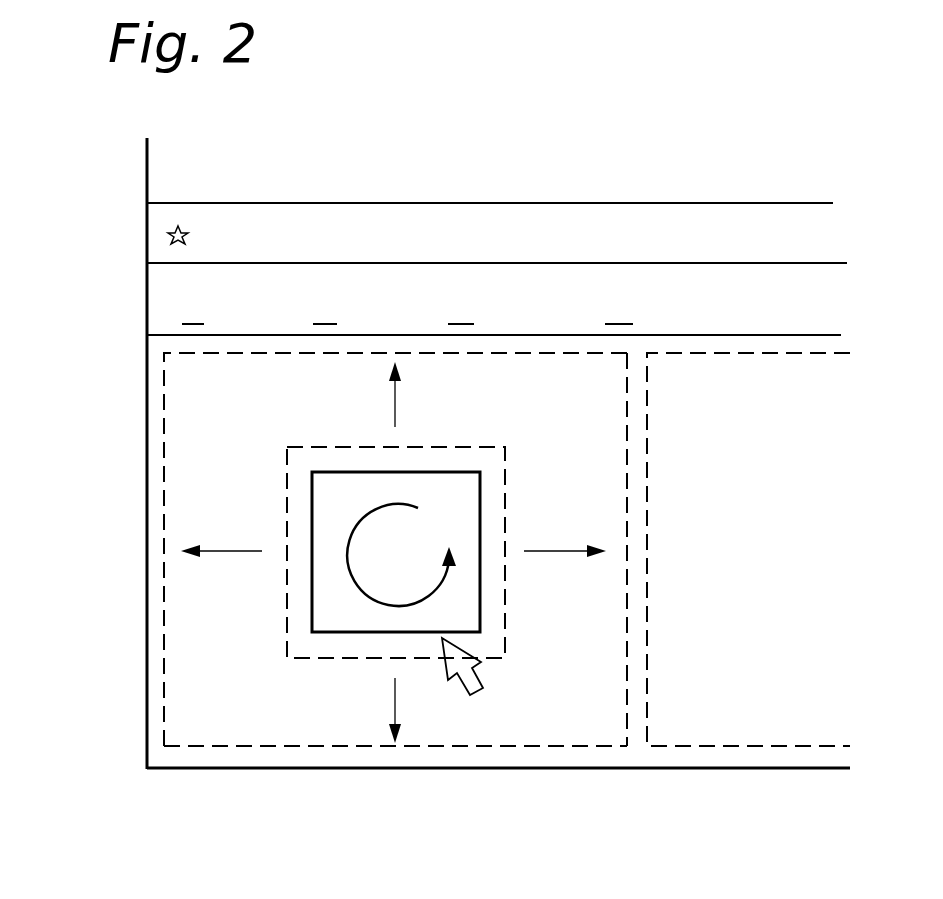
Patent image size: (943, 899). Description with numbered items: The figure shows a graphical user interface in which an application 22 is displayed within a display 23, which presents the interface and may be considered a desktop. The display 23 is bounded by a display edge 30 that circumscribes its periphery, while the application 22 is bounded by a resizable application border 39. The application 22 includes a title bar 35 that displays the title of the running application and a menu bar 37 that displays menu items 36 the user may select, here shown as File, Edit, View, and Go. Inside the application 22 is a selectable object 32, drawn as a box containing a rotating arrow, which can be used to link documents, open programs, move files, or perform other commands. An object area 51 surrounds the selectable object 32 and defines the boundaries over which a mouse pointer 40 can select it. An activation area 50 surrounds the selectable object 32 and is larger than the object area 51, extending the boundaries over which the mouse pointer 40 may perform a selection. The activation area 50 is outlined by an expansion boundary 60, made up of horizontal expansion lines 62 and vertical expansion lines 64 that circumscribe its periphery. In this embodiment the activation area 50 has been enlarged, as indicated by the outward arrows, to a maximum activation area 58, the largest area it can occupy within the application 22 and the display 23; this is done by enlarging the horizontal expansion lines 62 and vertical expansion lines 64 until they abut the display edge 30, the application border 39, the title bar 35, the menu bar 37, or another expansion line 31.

The application 22 is at (684, 173).
The display 23 is at (124, 229).
The display edge 30 is at (180, 769).
The frame border 31 is at (628, 753).
The selectable object 32 is at (312, 620).
The title bar 35 is at (760, 226).
The menu items 36 is at (318, 287).
The menu bar 37 is at (160, 298).
The application border 39 is at (600, 203).
The mouse pointer 40 is at (470, 693).
The activation area 50 is at (790, 747).
The object area 51 is at (312, 500).
The maximum activation area 58 is at (573, 748).
The expansion boundary 60 is at (373, 747).
The horizontal expansion lines 62 is at (297, 447).
The vertical expansion lines 64 is at (287, 613).